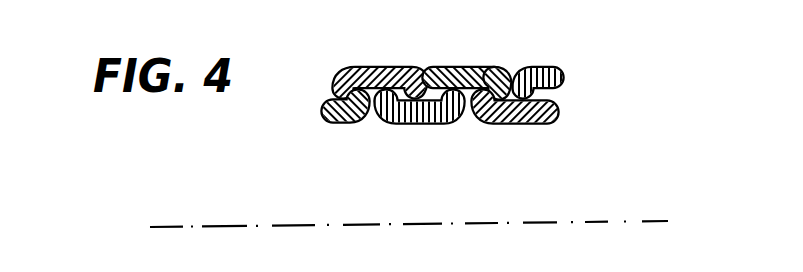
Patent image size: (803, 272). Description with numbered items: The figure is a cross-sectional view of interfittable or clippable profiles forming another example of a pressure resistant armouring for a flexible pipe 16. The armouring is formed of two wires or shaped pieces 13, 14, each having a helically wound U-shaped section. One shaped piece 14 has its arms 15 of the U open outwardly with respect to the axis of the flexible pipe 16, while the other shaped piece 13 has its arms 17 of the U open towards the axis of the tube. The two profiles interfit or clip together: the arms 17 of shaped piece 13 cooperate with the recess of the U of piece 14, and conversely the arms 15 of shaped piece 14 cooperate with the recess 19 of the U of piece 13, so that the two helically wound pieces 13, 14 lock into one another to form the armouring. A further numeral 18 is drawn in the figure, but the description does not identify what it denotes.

The shaped piece 13 is at (358, 68).
The recess of the U of piece 13 19 is at (410, 68).
The folded hook 18 is at (467, 92).
The arms of the U 17 is at (518, 68).
The shaped piece 14 is at (405, 122).
The arms of the U 15 is at (480, 118).
The flexible pipe 16 is at (642, 220).